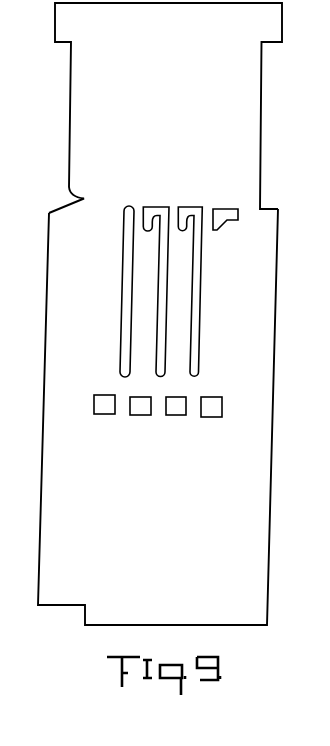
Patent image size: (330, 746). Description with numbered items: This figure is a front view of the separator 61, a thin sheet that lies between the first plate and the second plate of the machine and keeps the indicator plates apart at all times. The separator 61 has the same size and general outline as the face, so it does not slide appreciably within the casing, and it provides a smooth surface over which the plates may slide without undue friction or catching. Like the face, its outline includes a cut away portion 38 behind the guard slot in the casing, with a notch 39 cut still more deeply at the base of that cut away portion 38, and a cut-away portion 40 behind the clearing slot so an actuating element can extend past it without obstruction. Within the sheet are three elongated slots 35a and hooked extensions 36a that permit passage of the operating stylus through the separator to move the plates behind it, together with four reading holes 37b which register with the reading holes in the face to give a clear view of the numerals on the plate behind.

The cut away portion 38 is at (70, 103).
The cut-away portion 40 is at (262, 118).
The notch 39 is at (82, 198).
The separator 61 is at (258, 530).
The hooked extensions 36a is at (220, 207).
The slots 35a is at (191, 302).
The reading holes 37b is at (204, 412).